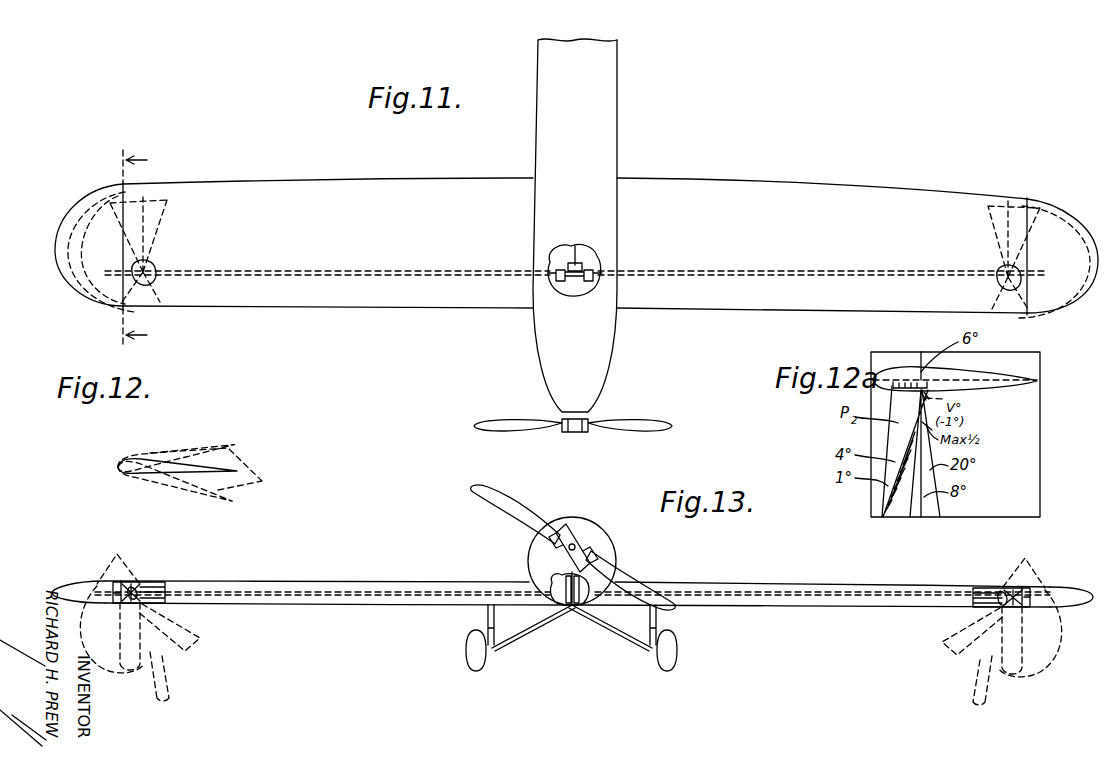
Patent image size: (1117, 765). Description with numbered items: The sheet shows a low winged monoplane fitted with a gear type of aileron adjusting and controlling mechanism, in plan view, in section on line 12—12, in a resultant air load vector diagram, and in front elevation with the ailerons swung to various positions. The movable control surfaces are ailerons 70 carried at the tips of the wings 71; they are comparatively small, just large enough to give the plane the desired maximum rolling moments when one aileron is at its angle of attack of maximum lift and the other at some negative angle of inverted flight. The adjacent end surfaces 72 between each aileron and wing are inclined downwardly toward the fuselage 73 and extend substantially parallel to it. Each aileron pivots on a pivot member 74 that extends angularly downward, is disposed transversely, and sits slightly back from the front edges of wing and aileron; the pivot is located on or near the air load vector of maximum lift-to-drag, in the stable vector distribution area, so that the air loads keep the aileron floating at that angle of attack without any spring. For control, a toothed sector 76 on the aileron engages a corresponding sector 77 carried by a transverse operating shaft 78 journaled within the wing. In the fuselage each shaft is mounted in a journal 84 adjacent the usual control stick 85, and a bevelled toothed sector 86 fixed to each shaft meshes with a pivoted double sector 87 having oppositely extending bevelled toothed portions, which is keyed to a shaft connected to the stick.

In FIG. 11, the section line 12- 12 is at (146, 247).
In FIG. 11, the aileron 70 is at (96, 200).
In FIG. 12, the aileron 70 is at (175, 463).
In FIG. 13, the aileron 70 is at (72, 581).
In FIG. 11, the wing 71 is at (414, 186).
In FIG. 13, the wing 71 is at (372, 582).
In FIG. 11, the adjacent end surface 72 is at (112, 222).
In FIG. 13, the adjacent end surface 72 is at (132, 603).
In FIG. 11, the fuselage 73 is at (615, 138).
In FIG. 13, the fuselage 73 is at (614, 560).
In FIG. 13, the pivot member 74 is at (130, 592).
In FIG. 11, the toothed sector 76 is at (132, 272).
In FIG. 11, the sector 77 is at (152, 266).
In FIG. 13, the sector 77 is at (1003, 590).
In FIG. 11, the transverse operating shaft 78 is at (352, 271).
In FIG. 13, the transverse operating shaft 78 is at (302, 597).
In FIG. 13, the journal 84 is at (552, 582).
In FIG. 11, the control stick 85 is at (575, 280).
In FIG. 13, the control stick 85 is at (567, 578).
In FIG. 11, the bevelled toothed sector 86 is at (556, 266).
In FIG. 11, the pivoted double sector 87 is at (573, 254).